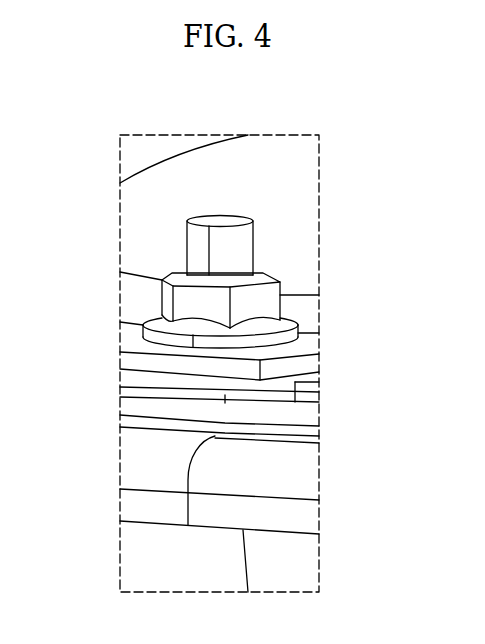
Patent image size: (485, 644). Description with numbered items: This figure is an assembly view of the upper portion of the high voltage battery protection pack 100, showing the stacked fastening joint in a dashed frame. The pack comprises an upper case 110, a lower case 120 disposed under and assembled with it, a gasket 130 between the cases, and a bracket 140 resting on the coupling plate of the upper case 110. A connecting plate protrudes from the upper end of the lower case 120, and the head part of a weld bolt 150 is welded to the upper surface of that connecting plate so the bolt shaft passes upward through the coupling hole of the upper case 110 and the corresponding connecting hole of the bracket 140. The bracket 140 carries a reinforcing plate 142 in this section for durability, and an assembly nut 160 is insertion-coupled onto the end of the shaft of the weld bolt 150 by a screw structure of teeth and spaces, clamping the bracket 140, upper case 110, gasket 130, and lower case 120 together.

The high voltage battery protection pack 100 is at (246, 110).
The upper case 110 is at (138, 385).
The lower case 120 is at (291, 463).
The gasket 130 is at (298, 420).
The bracket 140 is at (288, 390).
The reinforcing plate 142 is at (136, 340).
The weld bolt 150 is at (250, 247).
The assembly nut 160 is at (190, 297).